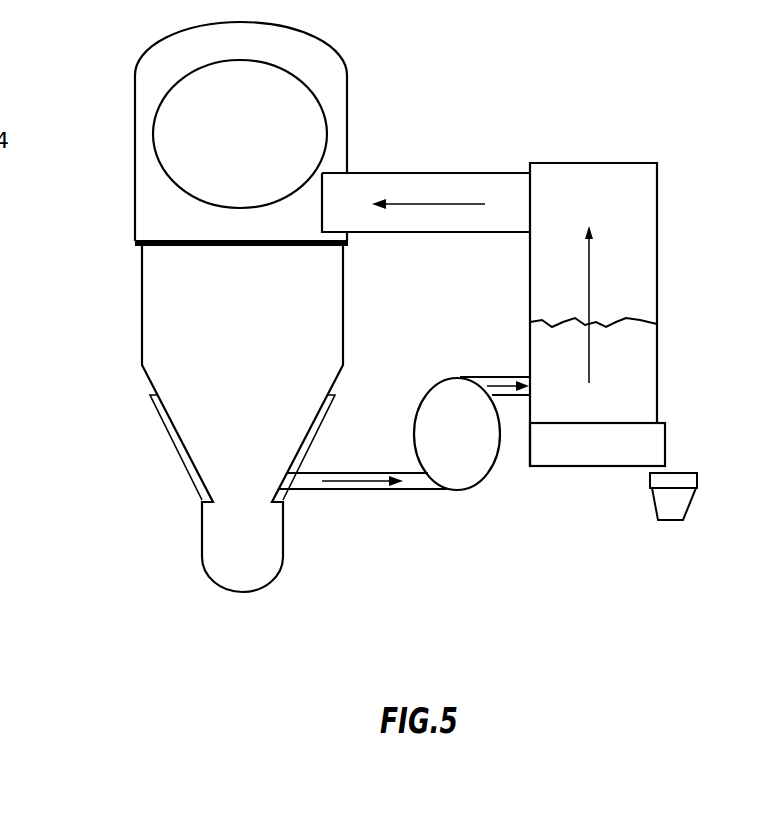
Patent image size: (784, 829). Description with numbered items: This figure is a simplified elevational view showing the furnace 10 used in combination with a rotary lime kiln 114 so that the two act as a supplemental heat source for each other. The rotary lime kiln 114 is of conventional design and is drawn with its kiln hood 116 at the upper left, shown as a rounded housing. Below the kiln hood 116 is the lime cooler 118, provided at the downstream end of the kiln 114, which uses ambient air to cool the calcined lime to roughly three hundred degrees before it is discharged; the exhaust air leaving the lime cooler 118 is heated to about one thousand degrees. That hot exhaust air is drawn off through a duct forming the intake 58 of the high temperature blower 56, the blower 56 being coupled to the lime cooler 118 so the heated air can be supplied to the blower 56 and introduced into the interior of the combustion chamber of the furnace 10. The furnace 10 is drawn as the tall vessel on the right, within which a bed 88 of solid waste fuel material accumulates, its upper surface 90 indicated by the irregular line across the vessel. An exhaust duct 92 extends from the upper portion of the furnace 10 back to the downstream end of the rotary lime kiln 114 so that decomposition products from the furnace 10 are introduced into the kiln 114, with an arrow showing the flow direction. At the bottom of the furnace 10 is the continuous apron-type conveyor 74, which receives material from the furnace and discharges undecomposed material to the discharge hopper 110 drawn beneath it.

The furnace 10 is at (665, 221).
The high temperature blower 56 is at (463, 470).
The intake 58 is at (372, 476).
The apron-type conveyor 74 is at (648, 438).
The bed of solid waste fuel material 88 is at (630, 364).
The upper surface of fuel bed 90 is at (610, 323).
The exhaust duct 92 is at (410, 173).
The discharge hopper 110 is at (697, 481).
The rotary lime kiln 114 is at (227, 135).
The kiln hood 116 is at (338, 57).
The lime cooler 118 is at (203, 425).